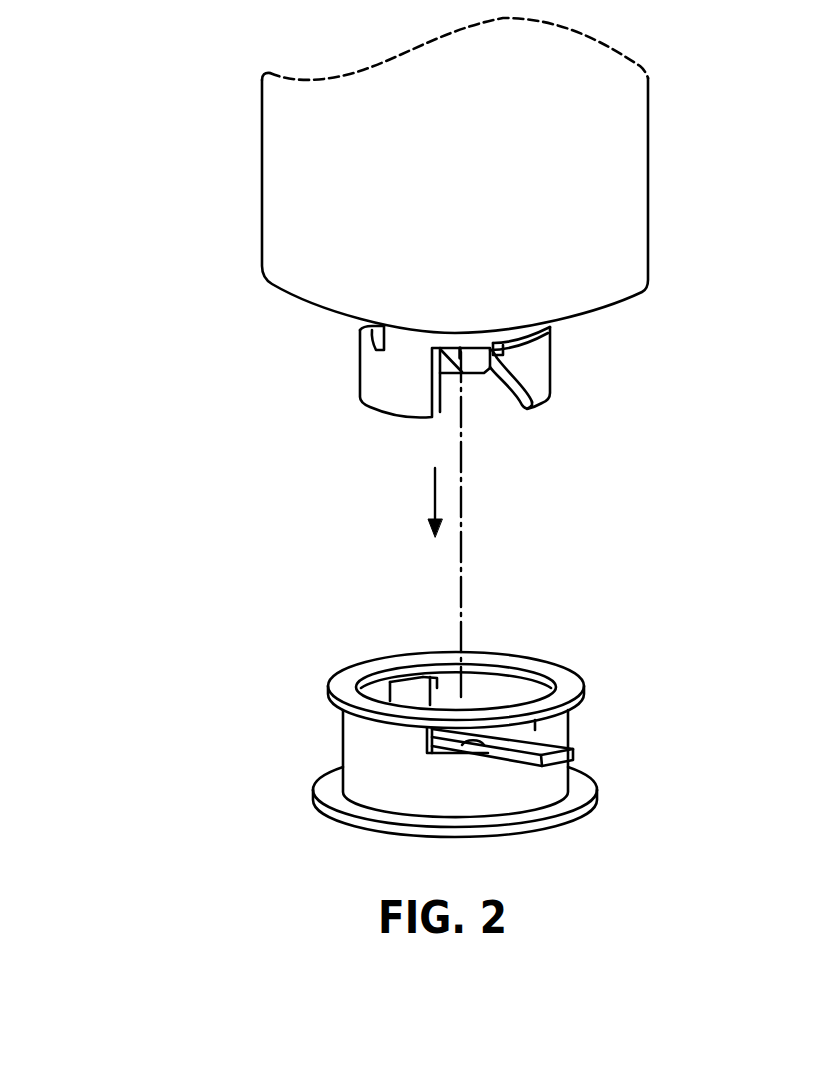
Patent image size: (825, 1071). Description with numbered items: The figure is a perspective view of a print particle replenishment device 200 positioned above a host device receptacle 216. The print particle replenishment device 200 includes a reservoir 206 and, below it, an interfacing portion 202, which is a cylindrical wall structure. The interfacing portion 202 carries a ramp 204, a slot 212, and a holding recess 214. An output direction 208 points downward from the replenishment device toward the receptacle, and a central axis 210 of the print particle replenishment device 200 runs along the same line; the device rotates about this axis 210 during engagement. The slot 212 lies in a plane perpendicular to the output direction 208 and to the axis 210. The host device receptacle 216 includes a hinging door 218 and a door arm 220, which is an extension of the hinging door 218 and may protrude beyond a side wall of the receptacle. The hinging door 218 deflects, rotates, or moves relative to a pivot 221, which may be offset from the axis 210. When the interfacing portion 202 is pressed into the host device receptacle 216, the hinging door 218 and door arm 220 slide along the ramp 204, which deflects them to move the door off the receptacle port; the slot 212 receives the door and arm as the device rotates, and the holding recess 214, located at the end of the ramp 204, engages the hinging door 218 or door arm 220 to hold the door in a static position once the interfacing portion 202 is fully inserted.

The print particle replenishment device 200 is at (153, 82).
The interfacing portion 202 is at (330, 424).
The ramp 204 is at (497, 386).
The reservoir 206 is at (649, 257).
The output direction 208 is at (430, 492).
The axis 210 is at (462, 560).
The slot 212 is at (551, 336).
The holding recess 214 is at (470, 348).
The host device receptacle 216 is at (605, 633).
The hinging door 218 is at (430, 702).
The door arm 220 is at (574, 746).
The pivot 221 is at (432, 745).